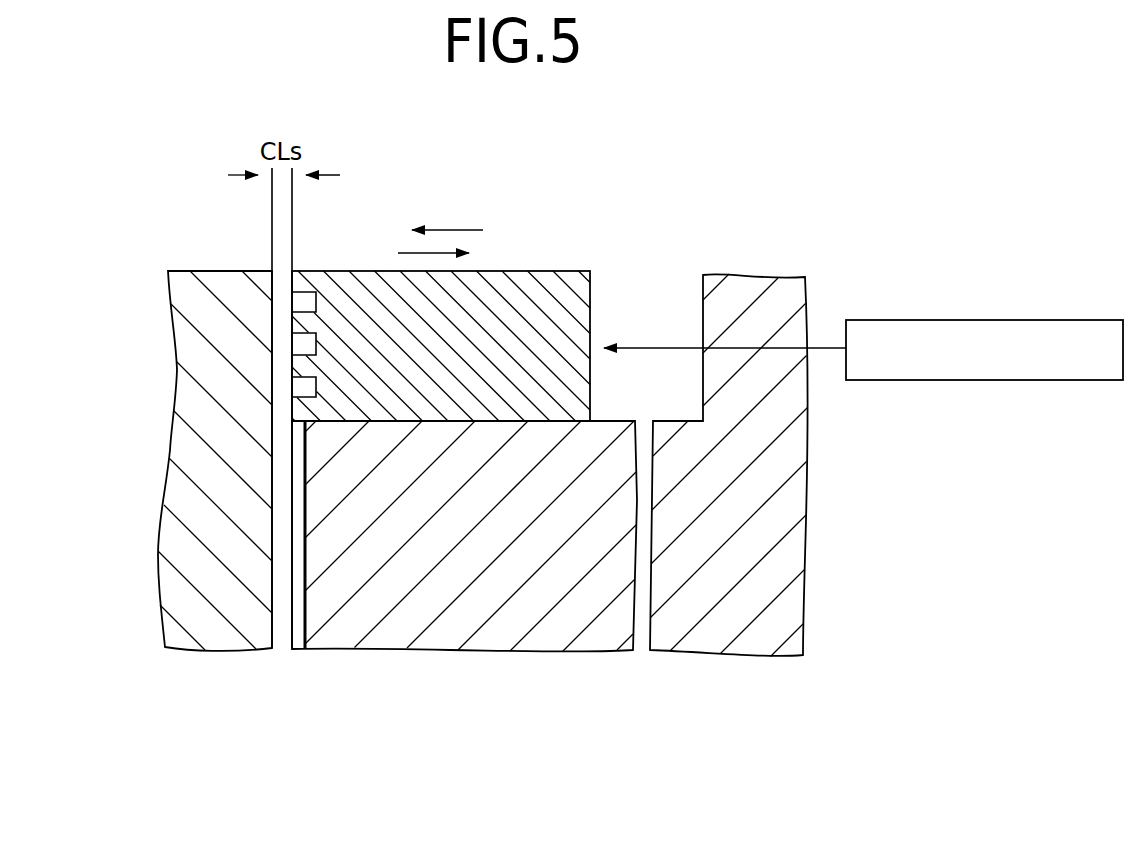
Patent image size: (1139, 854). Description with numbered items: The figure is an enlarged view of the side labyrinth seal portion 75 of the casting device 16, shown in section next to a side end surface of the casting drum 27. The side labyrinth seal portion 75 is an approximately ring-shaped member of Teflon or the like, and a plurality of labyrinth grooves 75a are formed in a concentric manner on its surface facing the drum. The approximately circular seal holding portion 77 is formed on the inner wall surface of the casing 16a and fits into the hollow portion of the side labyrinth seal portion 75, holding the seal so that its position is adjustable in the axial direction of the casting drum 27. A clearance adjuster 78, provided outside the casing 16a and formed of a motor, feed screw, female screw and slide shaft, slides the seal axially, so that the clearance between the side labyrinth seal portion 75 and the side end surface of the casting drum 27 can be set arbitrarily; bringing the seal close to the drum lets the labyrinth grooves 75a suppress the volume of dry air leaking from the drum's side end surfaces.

The casting device 16 is at (506, 742).
The casing 16a is at (743, 654).
The casting drum 27 is at (221, 649).
The side labyrinth seal portion 75 is at (528, 272).
The labyrinth grooves 75a is at (302, 388).
The seal holding portion 77 is at (386, 647).
The clearance adjuster 78 is at (923, 320).